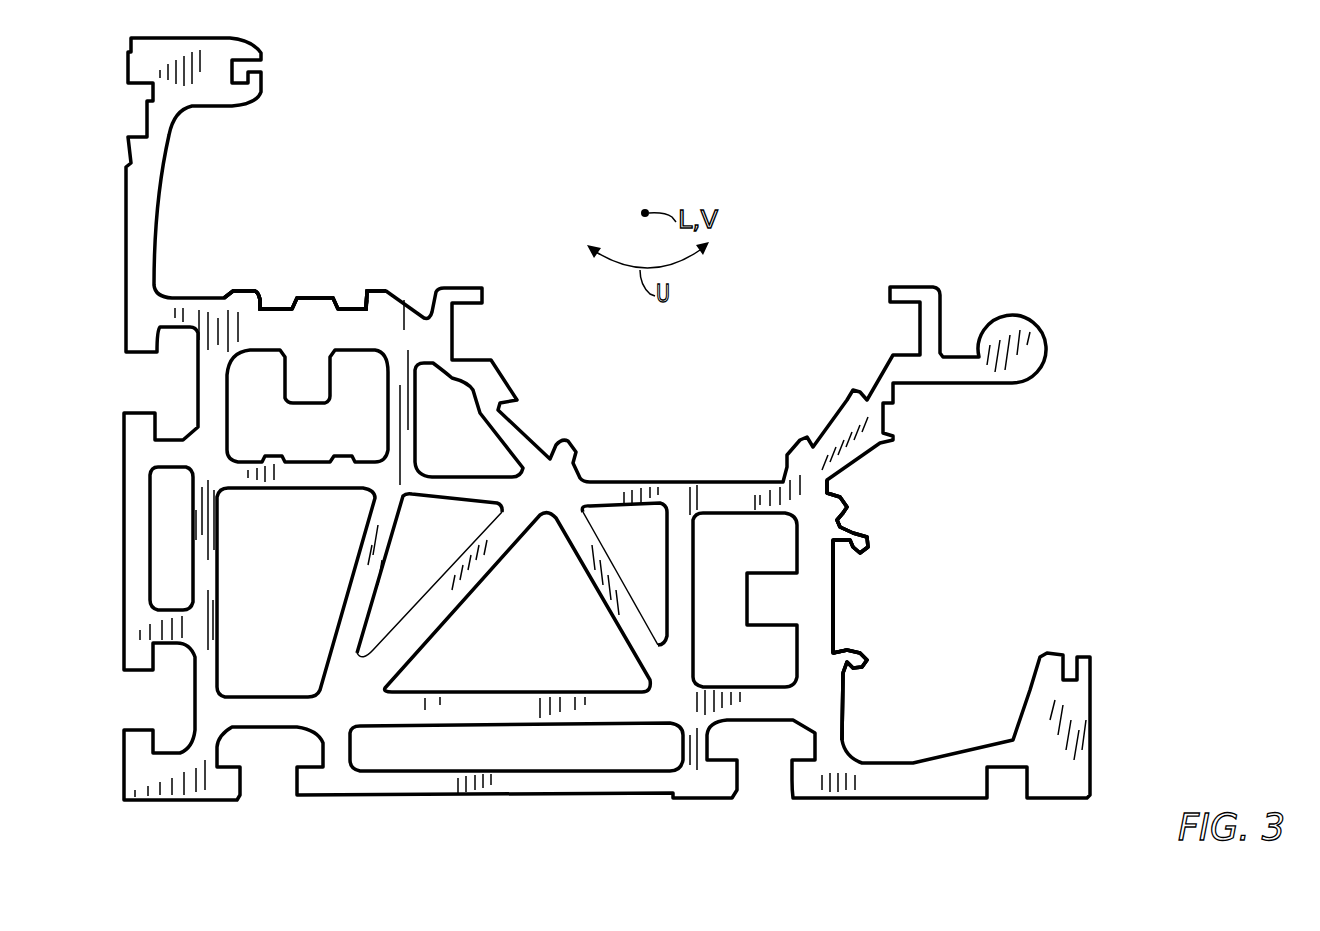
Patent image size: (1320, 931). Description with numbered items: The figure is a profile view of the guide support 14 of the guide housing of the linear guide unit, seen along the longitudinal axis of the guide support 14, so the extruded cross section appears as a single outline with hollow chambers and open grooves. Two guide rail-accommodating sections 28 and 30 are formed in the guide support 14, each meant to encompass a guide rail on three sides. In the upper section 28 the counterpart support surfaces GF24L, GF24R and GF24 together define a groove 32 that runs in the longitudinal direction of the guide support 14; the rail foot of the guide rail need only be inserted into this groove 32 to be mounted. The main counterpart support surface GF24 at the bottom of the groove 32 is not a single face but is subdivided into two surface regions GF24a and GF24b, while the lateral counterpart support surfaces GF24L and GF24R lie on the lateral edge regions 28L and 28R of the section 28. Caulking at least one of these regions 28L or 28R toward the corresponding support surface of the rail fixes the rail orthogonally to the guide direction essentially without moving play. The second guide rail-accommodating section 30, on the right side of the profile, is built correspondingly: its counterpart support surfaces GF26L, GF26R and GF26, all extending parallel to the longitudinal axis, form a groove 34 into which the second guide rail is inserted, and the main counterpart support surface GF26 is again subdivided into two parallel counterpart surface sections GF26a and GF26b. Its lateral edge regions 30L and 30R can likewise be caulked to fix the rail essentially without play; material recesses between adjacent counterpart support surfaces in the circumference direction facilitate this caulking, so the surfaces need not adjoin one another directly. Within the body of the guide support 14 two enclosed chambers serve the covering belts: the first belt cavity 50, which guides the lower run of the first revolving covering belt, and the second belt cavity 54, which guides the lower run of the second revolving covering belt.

The guide support 14 is at (392, 786).
The guide rail-accommodating section 28 is at (337, 328).
The lateral edge region 28L is at (233, 293).
The lateral edge region 28R is at (373, 290).
The guide rail-accommodating section 30 is at (812, 650).
The lateral edge region 30L is at (846, 512).
The lateral edge region 30R is at (844, 683).
The groove 32 is at (291, 318).
The groove 34 is at (846, 592).
The first belt cavity 50 is at (271, 435).
The second belt cavity 54 is at (746, 665).
The main counterpart support surface GF24 is at (376, 176).
The surface region GF24a is at (273, 300).
The surface region GF24b is at (337, 300).
The counterpart support surface GF24L is at (262, 295).
The counterpart support surface GF24R is at (357, 290).
The main counterpart support surface GF26 is at (966, 546).
The counterpart surface section GF26a is at (838, 571).
The counterpart surface section GF26b is at (838, 632).
The counterpart support surface GF26L is at (850, 534).
The counterpart support surface GF26R is at (852, 654).